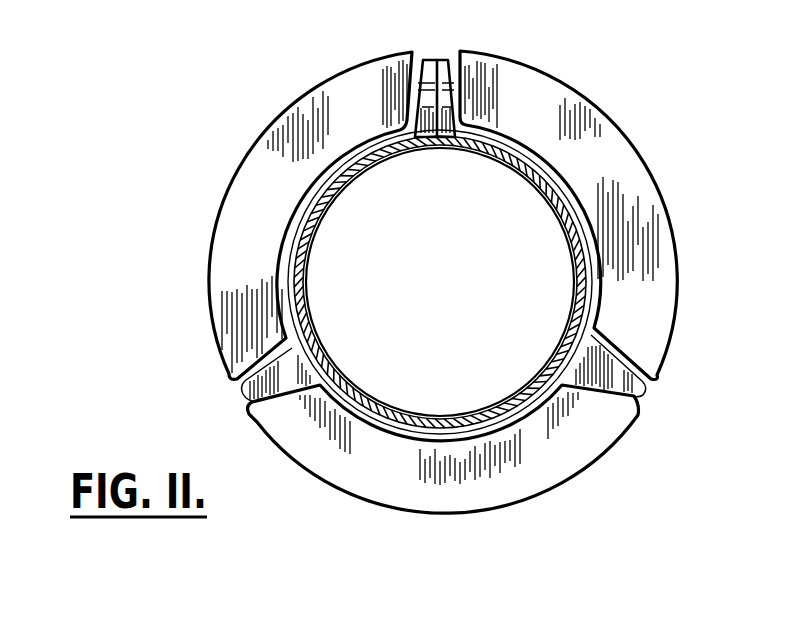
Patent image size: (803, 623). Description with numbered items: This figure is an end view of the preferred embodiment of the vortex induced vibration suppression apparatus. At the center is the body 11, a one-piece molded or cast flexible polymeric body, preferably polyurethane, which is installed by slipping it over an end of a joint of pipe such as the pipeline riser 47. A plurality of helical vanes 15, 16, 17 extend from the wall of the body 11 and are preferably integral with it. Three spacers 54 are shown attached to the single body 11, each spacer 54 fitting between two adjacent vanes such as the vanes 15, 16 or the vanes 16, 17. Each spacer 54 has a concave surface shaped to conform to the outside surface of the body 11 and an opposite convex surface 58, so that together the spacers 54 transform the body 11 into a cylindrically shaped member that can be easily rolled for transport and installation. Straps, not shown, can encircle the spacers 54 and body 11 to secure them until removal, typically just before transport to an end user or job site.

The body 11 is at (458, 118).
The helical vane 15 is at (243, 399).
The helical vane 16 is at (655, 383).
The helical vane 17 is at (443, 58).
The pipeline riser 47 is at (493, 157).
The spacer 54 is at (240, 208).
The convex surface 58 is at (212, 8).